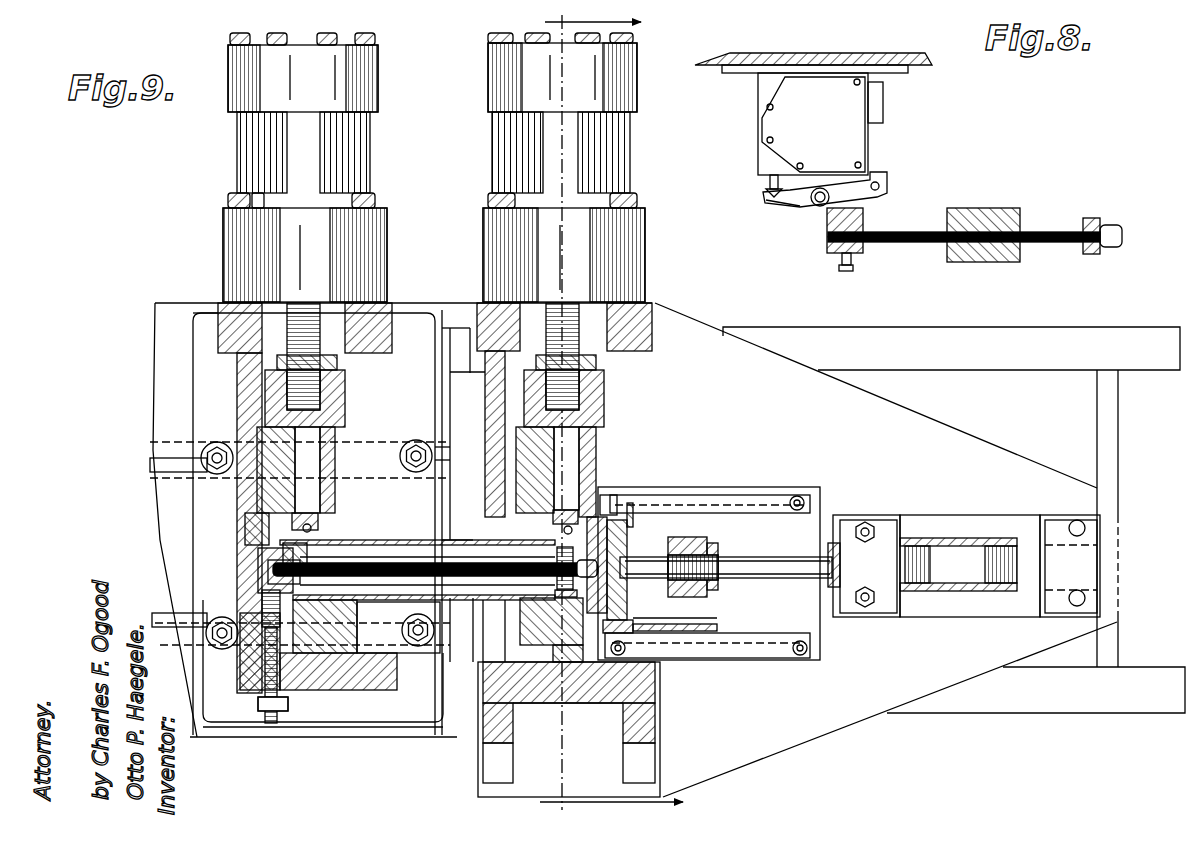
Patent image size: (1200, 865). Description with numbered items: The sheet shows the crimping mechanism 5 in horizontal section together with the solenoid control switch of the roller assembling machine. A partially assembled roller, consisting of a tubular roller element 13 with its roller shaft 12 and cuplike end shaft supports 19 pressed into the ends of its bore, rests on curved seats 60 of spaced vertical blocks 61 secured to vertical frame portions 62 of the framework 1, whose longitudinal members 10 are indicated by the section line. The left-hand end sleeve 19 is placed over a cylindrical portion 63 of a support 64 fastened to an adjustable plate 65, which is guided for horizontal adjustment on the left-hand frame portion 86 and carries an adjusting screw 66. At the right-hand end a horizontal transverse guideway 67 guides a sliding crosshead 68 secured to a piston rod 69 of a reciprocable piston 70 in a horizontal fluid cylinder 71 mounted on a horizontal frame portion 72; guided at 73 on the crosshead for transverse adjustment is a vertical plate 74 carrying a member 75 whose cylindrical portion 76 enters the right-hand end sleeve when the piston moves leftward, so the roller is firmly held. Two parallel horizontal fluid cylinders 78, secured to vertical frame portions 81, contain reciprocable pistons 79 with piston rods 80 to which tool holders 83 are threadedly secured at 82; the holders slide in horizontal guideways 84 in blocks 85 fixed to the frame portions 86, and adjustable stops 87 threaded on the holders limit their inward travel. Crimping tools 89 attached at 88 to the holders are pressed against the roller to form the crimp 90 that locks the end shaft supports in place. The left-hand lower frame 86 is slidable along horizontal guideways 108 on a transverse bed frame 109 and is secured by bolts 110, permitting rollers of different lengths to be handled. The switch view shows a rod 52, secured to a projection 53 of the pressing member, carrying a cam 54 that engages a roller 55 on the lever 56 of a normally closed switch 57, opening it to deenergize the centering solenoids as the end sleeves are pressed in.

In FIG. 9, the framework 1 is at (1096, 327).
In FIG. 8, the framework 1 is at (906, 60).
In FIG. 9, the crimping mechanism 5 is at (646, 256).
In FIG. 9, the longitudinal members 10 is at (626, 412).
In FIG. 9, the roller shaft 12 is at (453, 568).
In FIG. 9, the tubular roller element 13 is at (458, 542).
In FIG. 9, the end shaft supports 19 is at (352, 576).
In FIG. 8, the rod 52 is at (1041, 232).
In FIG. 8, the projection 53 is at (1094, 220).
In FIG. 8, the cam 54 is at (827, 227).
In FIG. 8, the roller 55 is at (818, 190).
In FIG. 8, the lever 56 is at (790, 203).
In FIG. 8, the normally closed switch 57 is at (778, 148).
In FIG. 9, the curved seats 60 is at (410, 598).
In FIG. 9, the vertical blocks 61 is at (431, 698).
In FIG. 9, the vertical frame portions 62 is at (502, 690).
In FIG. 9, the cylindrical portion 63 is at (262, 582).
In FIG. 9, the support 64 is at (258, 553).
In FIG. 9, the adjustable plate 65 is at (248, 530).
In FIG. 9, the adjusting screw 66 is at (278, 714).
In FIG. 9, the horizontal transverse guideway 67 is at (735, 496).
In FIG. 9, the sliding crosshead 68 is at (688, 545).
In FIG. 9, the piston rod 69 is at (766, 565).
In FIG. 9, the reciprocable piston 70 is at (906, 541).
In FIG. 9, the horizontal fluid cylinder 71 is at (976, 539).
In FIG. 9, the horizontal frame portion 72 is at (955, 678).
In FIG. 9, the guide 73 is at (634, 508).
In FIG. 9, the vertical plate 74 is at (630, 609).
In FIG. 9, the member 75 is at (600, 540).
In FIG. 9, the cylindrical portion 76 is at (526, 620).
In FIG. 9, the horizontal fluid cylinders 78 is at (292, 148).
In FIG. 9, the reciprocable pistons 79 is at (608, 505).
In FIG. 9, the piston rods 80 is at (300, 310).
In FIG. 9, the vertical frame portions 81 is at (226, 318).
In FIG. 9, the threaded connection 82 is at (338, 368).
In FIG. 9, the tool holders 83 is at (312, 455).
In FIG. 9, the horizontal guideways 84 is at (320, 477).
In FIG. 9, the blocks 85 is at (336, 464).
In FIG. 9, the frame portions 86 is at (238, 405).
In FIG. 9, the adjustable stops 87 is at (346, 396).
In FIG. 9, the attachment point 88 is at (322, 524).
In FIG. 9, the crimping tools 89 is at (313, 530).
In FIG. 9, the crimp 90 is at (318, 549).
In FIG. 9, the horizontal guideways 108 is at (170, 540).
In FIG. 9, the transverse bed frame 109 is at (176, 340).
In FIG. 9, the bolts 110 is at (216, 444).